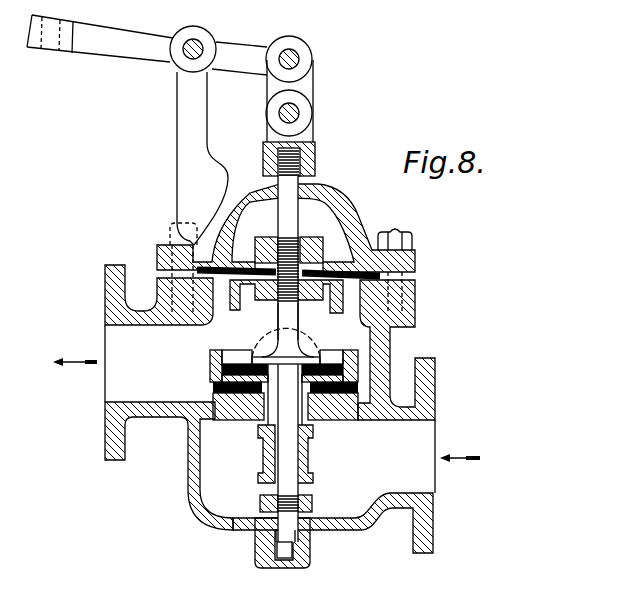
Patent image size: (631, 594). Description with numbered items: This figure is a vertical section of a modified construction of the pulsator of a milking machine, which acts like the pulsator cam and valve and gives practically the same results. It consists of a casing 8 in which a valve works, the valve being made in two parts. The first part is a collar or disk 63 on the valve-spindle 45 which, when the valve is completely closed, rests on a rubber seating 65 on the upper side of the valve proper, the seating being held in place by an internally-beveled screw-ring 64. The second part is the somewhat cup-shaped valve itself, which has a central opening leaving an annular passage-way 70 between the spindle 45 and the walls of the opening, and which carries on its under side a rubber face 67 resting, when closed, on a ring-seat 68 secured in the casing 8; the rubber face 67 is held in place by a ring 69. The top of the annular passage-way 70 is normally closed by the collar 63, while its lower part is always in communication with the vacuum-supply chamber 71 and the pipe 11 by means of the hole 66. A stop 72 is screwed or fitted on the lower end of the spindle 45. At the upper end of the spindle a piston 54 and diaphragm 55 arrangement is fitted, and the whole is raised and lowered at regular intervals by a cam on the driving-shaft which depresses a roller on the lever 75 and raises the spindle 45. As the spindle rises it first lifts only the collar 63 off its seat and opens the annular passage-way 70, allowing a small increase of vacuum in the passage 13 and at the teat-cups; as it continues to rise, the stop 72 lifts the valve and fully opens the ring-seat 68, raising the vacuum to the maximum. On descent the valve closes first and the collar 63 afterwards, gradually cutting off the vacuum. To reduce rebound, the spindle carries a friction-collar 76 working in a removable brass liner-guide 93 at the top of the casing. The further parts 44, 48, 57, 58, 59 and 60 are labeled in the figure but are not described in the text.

The casing 8 is at (413, 328).
The pipe 11 is at (460, 473).
The passage 13 is at (75, 376).
The lever bracket link 44 is at (188, 127).
The valve-spindle 45 is at (291, 183).
The stem neck 48 is at (298, 341).
The piston 54 is at (325, 302).
The diaphragm 55 is at (338, 270).
The bottom boss 57 is at (309, 560).
The link 58 is at (295, 85).
The bonnet 59 is at (333, 201).
The upper seat ring 60 is at (221, 370).
The collar or disk 63 is at (292, 357).
The internally-beveled screw-ring 64 is at (220, 349).
The rubber seating 65 is at (354, 371).
The hole 66 is at (265, 438).
The rubber face 67 is at (358, 390).
The ring-seat 68 is at (338, 412).
The ring 69 is at (248, 407).
The annular passage-way 70 is at (269, 410).
The vacuum-supply chamber 71 is at (333, 523).
The stop 72 is at (309, 500).
The lever 75 is at (108, 30).
The friction-collar 76 is at (275, 545).
The brass liner-guide 93 is at (268, 568).